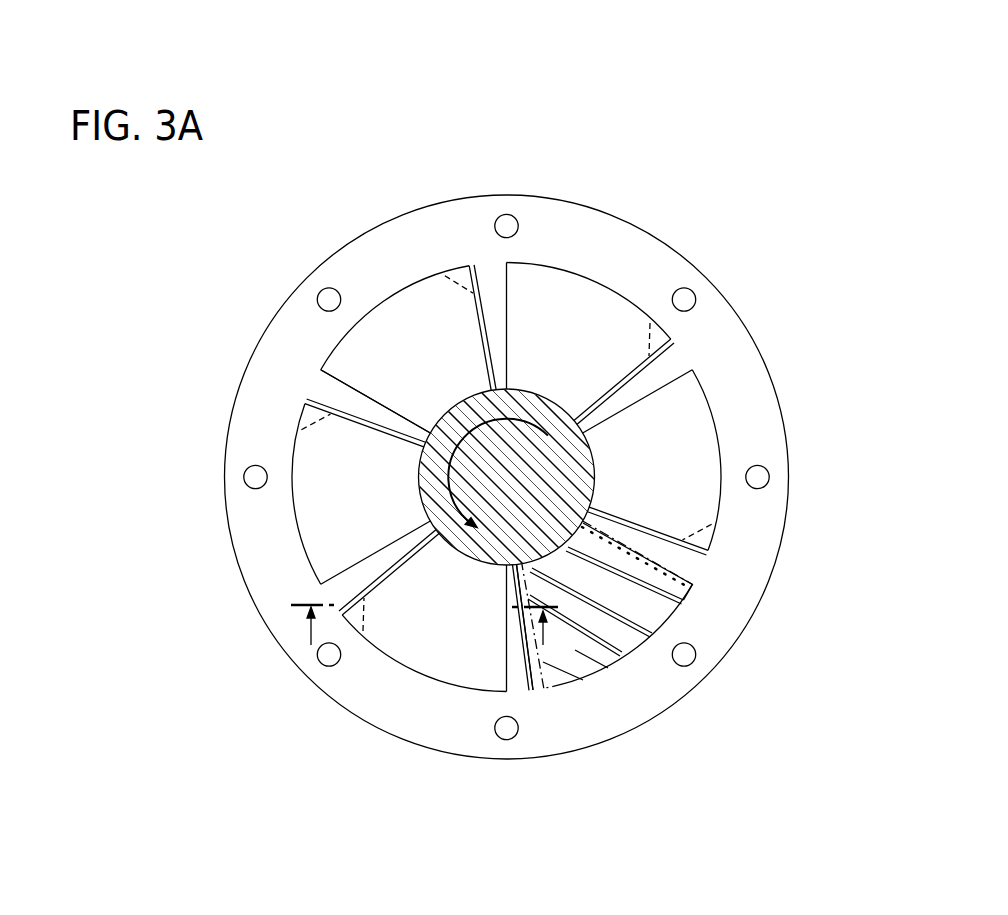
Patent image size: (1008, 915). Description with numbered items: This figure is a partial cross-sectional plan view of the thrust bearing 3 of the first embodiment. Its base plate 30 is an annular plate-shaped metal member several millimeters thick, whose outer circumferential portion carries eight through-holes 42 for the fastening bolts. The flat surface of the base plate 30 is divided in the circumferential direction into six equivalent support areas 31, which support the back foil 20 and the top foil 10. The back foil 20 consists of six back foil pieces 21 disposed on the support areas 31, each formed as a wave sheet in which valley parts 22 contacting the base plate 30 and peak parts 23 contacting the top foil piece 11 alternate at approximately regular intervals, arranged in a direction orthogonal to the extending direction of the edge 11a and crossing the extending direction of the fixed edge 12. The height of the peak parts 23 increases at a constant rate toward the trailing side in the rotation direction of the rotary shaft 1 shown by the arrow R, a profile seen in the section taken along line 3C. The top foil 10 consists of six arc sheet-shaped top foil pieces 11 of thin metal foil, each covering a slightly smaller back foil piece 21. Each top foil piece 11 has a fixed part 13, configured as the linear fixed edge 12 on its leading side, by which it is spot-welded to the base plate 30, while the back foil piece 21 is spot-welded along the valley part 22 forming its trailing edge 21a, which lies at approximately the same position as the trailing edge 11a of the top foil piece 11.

The rotary shaft 1 is at (445, 415).
The thrust bearing 3 is at (716, 246).
The top foil 10 is at (719, 373).
The top foil piece 11 is at (605, 296).
The edge 11a is at (334, 379).
The fixed edge 12 is at (425, 421).
The fixed part 13 is at (481, 283).
The back foil 20 is at (690, 642).
The back foil piece 21 is at (709, 586).
The edge 21a is at (700, 580).
The valley part 22 is at (660, 605).
The peak part 23 is at (630, 638).
The base plate 30 is at (627, 234).
The support area 31 is at (389, 277).
The through-hole 42 is at (517, 220).
The arrow indicating rotation direction R is at (472, 421).
The section line 3C is at (429, 631).